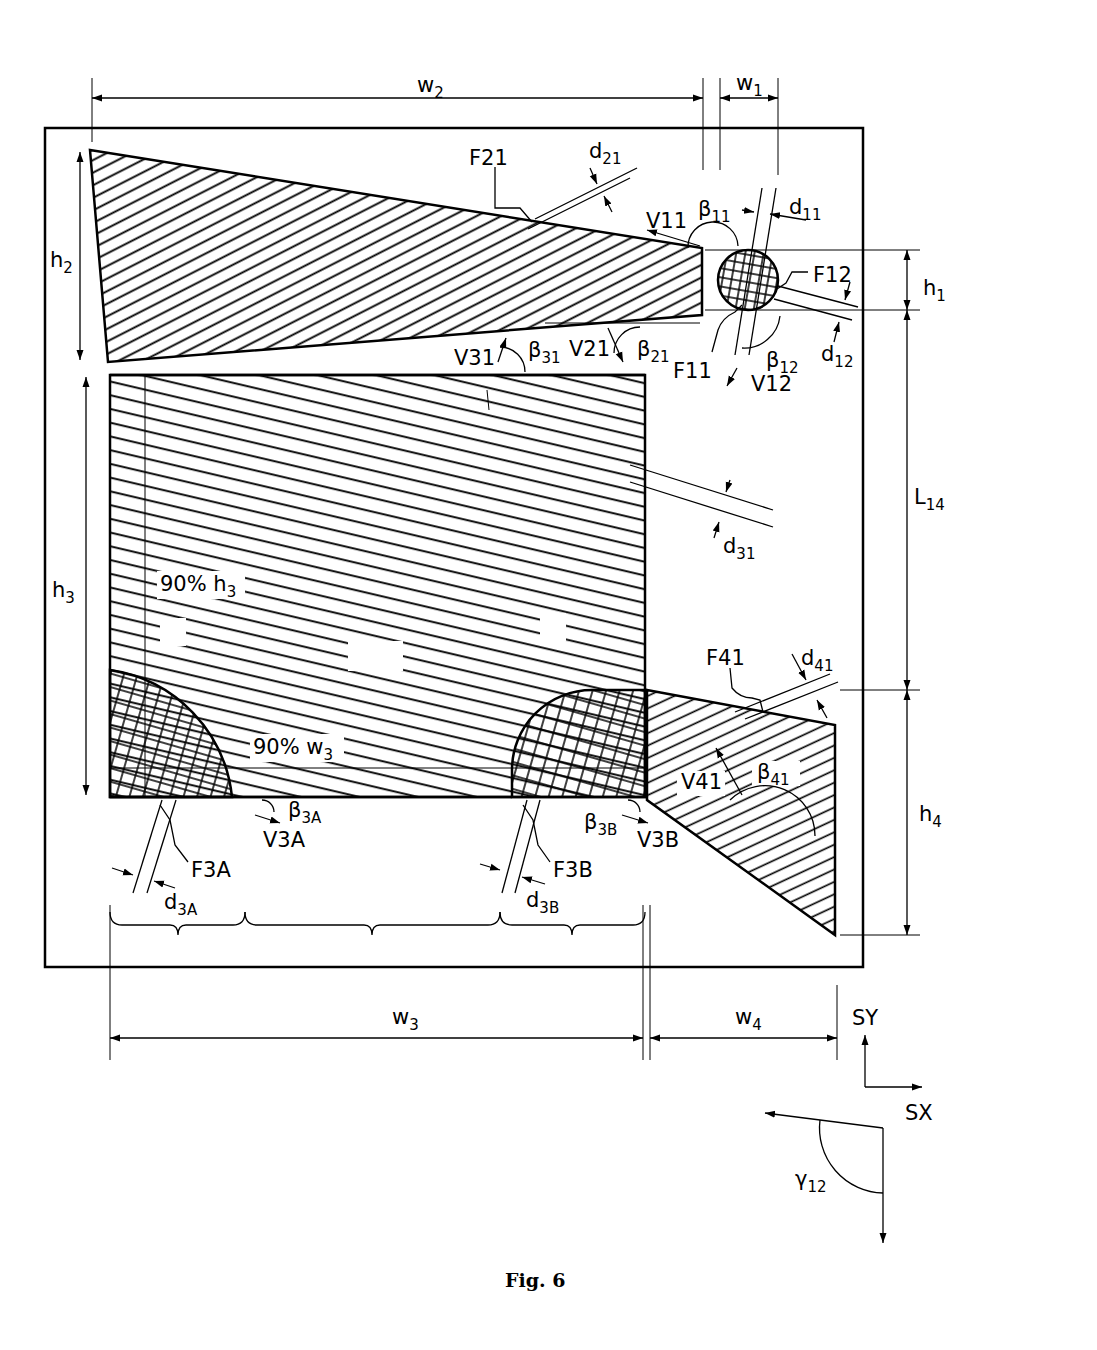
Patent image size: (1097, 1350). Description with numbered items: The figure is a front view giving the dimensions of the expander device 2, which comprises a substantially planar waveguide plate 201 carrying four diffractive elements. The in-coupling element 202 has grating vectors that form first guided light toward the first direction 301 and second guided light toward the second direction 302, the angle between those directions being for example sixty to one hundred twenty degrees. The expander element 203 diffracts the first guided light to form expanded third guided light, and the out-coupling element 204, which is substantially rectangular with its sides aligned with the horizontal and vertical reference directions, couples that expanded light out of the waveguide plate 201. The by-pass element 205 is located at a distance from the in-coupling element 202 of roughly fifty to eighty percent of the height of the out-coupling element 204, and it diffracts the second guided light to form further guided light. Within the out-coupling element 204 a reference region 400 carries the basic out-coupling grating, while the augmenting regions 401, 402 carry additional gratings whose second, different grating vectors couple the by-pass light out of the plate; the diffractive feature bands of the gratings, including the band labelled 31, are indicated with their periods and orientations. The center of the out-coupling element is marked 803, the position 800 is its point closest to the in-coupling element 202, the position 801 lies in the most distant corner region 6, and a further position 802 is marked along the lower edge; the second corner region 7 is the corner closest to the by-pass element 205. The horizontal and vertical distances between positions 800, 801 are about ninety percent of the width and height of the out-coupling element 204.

The expander device 2 is at (776, 38).
The waveguide plate 201 is at (862, 228).
The diffractive optical in-coupling element 202 is at (768, 255).
The diffractive optical expander element 203 is at (385, 198).
The diffractive optical out-coupling element 204 is at (648, 605).
The diffractive optical by-pass element 205 is at (745, 840).
The element band 31 is at (645, 478).
The reference region 400 is at (372, 954).
The augmenting region 401 is at (177, 833).
The augmenting region 402 is at (572, 843).
The position 800 is at (647, 380).
The position 801 is at (130, 799).
The lower surface portion 802 is at (505, 799).
The center of the out-coupling element 803 is at (375, 572).
The most distant corner region 6 is at (145, 750).
The second corner region 7 is at (590, 757).
The first direction 301 is at (824, 1106).
The second direction 302 is at (849, 1191).